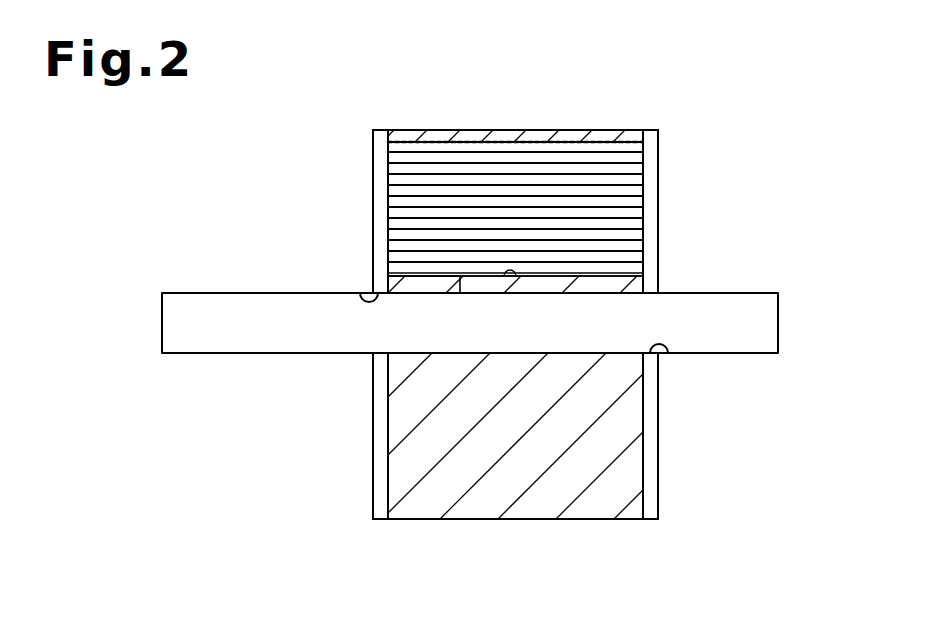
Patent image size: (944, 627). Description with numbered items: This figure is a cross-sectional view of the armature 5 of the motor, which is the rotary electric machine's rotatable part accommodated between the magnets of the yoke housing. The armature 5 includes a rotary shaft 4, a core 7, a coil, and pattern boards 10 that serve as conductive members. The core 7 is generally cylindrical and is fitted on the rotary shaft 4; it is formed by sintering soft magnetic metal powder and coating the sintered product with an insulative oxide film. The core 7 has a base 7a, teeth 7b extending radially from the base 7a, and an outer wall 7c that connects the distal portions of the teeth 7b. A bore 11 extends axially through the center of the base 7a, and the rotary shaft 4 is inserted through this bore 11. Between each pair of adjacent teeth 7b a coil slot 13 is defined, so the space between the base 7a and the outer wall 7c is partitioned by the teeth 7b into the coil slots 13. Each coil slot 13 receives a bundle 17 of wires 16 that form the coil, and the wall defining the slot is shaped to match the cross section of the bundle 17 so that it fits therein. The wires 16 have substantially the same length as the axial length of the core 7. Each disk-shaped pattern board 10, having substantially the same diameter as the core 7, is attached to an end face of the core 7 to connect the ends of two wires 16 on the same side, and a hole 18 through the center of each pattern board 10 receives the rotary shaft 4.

The rotary shaft 4 is at (172, 293).
The armature 5 is at (247, 167).
The core 7 is at (483, 523).
The base 7a is at (584, 292).
The teeth 7b is at (630, 469).
The outer wall 7c is at (528, 130).
The pattern board 10 is at (373, 243).
The bore 11 is at (426, 293).
The coil slot 13 is at (516, 278).
The wires 16 is at (638, 190).
The bundle 17 is at (449, 145).
The hole 18 is at (363, 297).